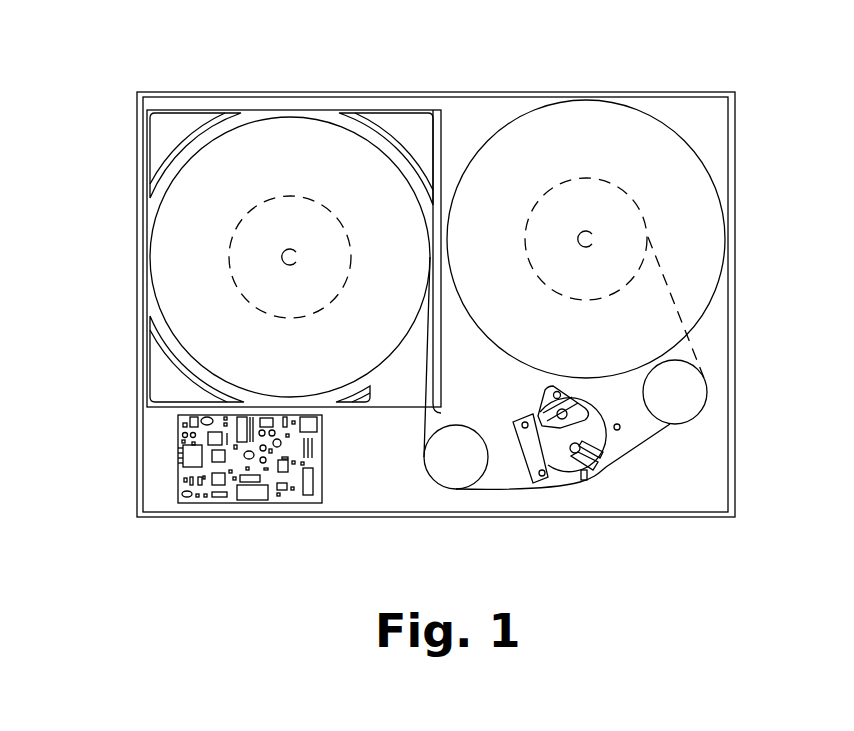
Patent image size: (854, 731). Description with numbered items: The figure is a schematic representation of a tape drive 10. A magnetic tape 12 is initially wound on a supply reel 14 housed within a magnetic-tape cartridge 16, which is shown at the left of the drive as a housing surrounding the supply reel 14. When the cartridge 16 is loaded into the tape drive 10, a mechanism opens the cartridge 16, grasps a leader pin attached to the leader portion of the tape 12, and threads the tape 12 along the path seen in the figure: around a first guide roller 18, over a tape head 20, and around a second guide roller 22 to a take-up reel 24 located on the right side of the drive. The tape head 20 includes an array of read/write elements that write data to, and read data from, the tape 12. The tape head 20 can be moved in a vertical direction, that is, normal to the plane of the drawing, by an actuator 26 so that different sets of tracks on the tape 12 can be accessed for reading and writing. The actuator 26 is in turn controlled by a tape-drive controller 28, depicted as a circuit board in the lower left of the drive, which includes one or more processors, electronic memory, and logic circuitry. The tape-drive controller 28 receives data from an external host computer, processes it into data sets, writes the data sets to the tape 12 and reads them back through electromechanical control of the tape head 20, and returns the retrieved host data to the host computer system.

The tape drive 10 is at (112, 85).
The magnetic tape 12 is at (643, 451).
The supply reel 14 is at (272, 168).
The magnetic-tape cartridge 16 is at (160, 382).
The first guide roller 18 is at (443, 470).
The tape head 20 is at (584, 480).
The second guide roller 22 is at (693, 393).
The take-up reel 24 is at (605, 143).
The actuator 26 is at (549, 403).
The tape-drive controller 28 is at (314, 462).